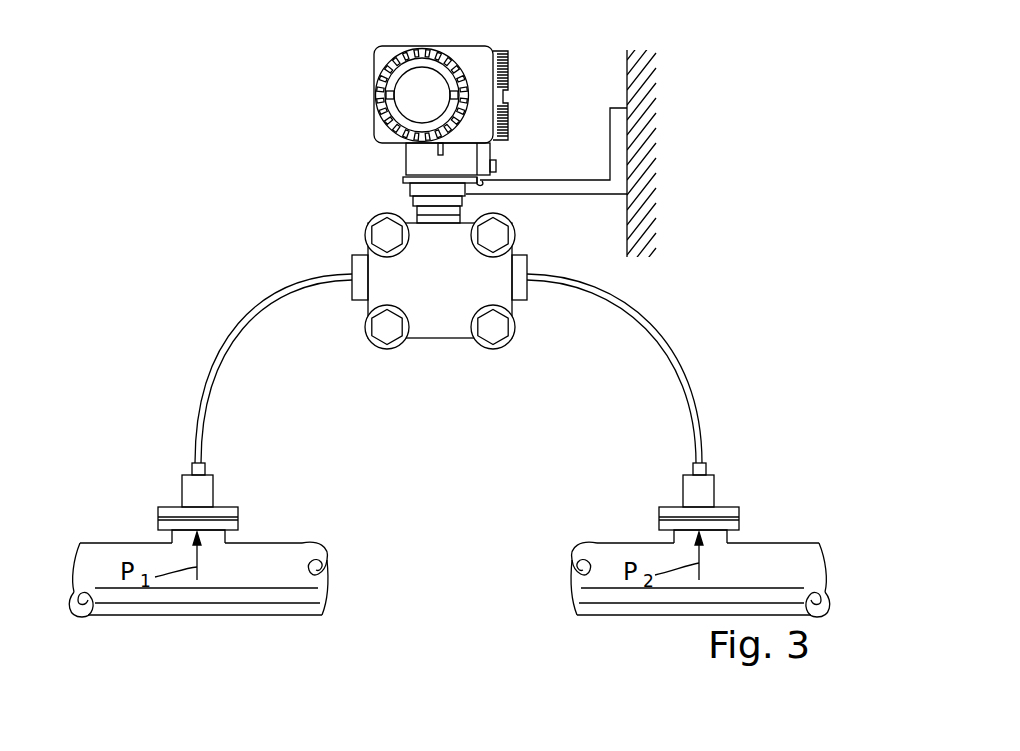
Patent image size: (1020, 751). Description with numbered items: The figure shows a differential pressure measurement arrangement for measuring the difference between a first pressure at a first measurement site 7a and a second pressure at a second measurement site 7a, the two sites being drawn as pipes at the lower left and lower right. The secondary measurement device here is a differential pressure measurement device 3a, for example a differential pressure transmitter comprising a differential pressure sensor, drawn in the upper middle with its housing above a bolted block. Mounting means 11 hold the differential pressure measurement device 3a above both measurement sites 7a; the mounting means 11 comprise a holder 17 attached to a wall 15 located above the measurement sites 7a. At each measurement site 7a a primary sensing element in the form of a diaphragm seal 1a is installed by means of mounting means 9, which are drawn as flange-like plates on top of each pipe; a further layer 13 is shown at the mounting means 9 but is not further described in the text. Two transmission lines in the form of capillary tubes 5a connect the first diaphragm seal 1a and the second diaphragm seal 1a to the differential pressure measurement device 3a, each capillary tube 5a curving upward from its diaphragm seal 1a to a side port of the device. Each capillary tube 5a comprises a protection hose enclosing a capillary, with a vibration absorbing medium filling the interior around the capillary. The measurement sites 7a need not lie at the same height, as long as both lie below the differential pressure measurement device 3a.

The diaphragm seal 1a is at (159, 474).
The differential pressure measurement device 3a is at (415, 157).
The capillary tube 5a is at (220, 355).
The measurement site 7a is at (258, 517).
The mounting means 9 is at (158, 510).
The mounting means 11 is at (563, 137).
The seal 13 is at (158, 522).
The wall 15 is at (642, 107).
The holder 17 is at (568, 194).